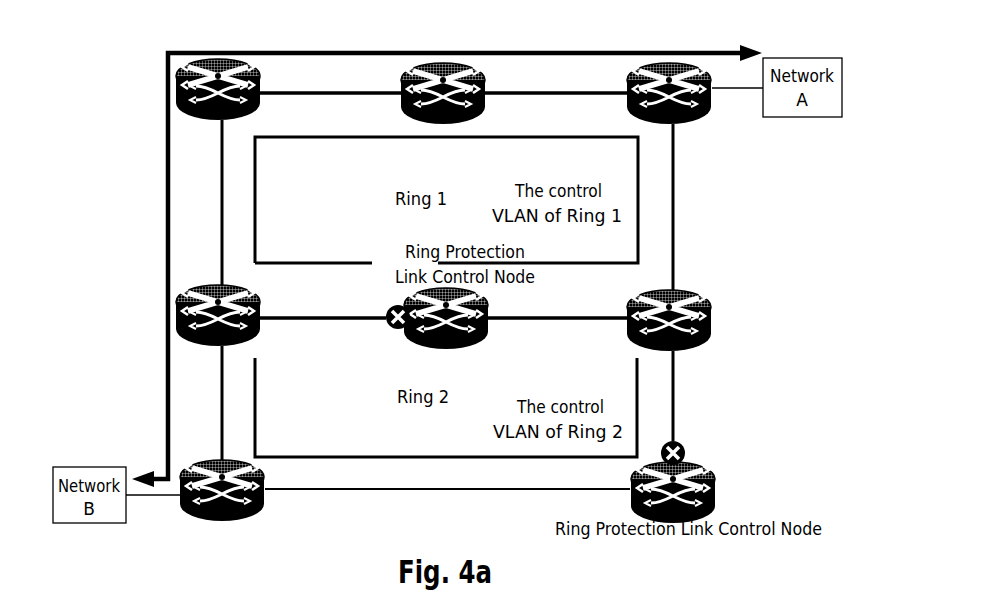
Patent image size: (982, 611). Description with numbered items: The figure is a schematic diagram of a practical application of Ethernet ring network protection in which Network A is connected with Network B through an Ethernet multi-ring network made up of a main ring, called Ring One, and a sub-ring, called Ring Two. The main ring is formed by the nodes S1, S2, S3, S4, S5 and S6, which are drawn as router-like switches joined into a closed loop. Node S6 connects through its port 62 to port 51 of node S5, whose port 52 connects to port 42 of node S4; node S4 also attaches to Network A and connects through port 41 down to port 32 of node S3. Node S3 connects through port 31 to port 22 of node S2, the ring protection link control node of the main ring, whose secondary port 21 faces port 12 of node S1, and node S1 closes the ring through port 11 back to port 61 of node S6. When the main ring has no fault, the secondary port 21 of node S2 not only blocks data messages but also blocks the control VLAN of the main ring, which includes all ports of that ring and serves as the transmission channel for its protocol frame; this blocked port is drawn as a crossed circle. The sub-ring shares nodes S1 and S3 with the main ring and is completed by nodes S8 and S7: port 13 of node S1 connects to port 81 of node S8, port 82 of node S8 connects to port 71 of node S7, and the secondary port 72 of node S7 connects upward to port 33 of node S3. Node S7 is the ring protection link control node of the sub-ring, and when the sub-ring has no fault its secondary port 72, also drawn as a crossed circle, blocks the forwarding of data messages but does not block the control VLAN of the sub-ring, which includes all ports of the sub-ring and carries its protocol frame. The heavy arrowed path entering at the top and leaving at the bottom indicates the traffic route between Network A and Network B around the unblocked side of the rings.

The node S1 is at (197, 315).
The node S2 is at (433, 296).
The node S3 is at (689, 320).
The node S4 is at (669, 75).
The node S5 is at (443, 75).
The node S6 is at (218, 73).
The node S7 is at (686, 492).
The node S8 is at (222, 507).
The port 11 is at (206, 242).
The port 12 is at (323, 309).
The port 13 is at (207, 373).
The secondary port 21 is at (387, 313).
The port 22 is at (523, 307).
The port 31 is at (593, 306).
The port 32 is at (689, 250).
The port 33 is at (689, 396).
The port 41 is at (687, 167).
The port 42 is at (591, 82).
The port 51 is at (365, 82).
The port 52 is at (520, 82).
The port 61 is at (206, 160).
The port 62 is at (295, 82).
The port 71 is at (540, 505).
The secondary port 72 is at (685, 451).
The port 81 is at (209, 430).
The port 82 is at (357, 505).